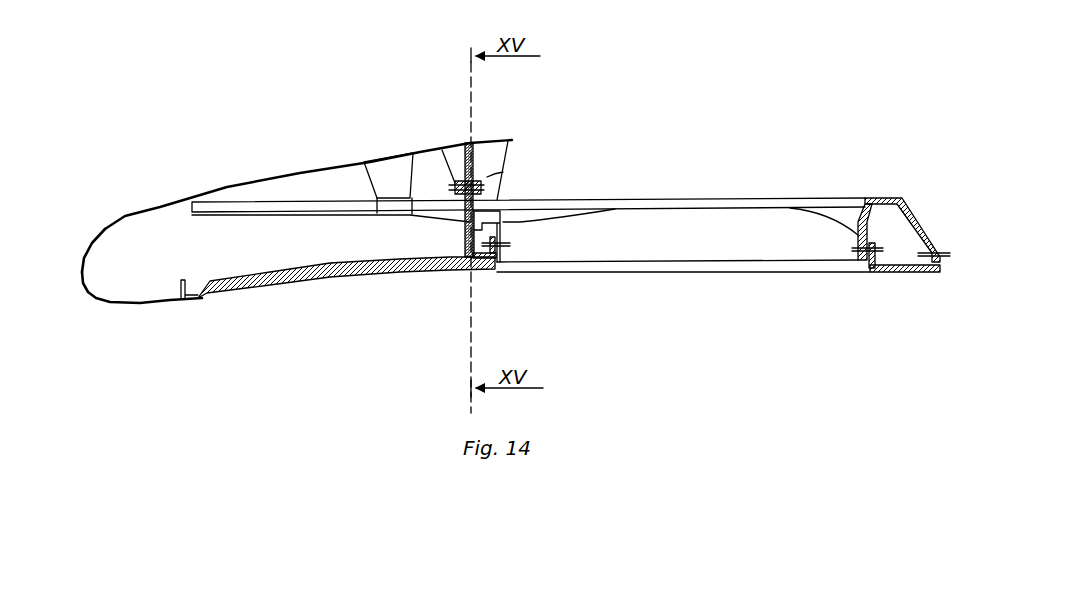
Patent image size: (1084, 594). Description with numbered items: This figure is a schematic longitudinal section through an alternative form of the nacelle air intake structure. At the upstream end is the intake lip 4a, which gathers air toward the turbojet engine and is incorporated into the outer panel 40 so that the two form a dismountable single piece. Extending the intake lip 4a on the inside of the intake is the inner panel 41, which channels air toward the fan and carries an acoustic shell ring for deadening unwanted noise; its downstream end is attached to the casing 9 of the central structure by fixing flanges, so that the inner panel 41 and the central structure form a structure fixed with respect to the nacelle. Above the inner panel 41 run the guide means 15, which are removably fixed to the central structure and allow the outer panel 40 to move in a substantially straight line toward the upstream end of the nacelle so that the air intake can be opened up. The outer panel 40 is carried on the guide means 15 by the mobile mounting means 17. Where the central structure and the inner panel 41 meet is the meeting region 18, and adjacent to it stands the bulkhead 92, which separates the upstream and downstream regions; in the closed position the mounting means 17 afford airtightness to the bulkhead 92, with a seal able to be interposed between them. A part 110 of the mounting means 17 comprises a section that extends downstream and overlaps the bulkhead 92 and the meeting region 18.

The intake lip 4a is at (83, 262).
The outer panel 40 is at (243, 181).
The inner panel 41 is at (237, 298).
The guide means 15 is at (728, 194).
The mounting means 17 is at (391, 176).
The part of the mounting means 110 is at (488, 182).
The bulkhead 92 is at (468, 237).
The meeting region 18 is at (458, 278).
The casing 9 is at (727, 268).